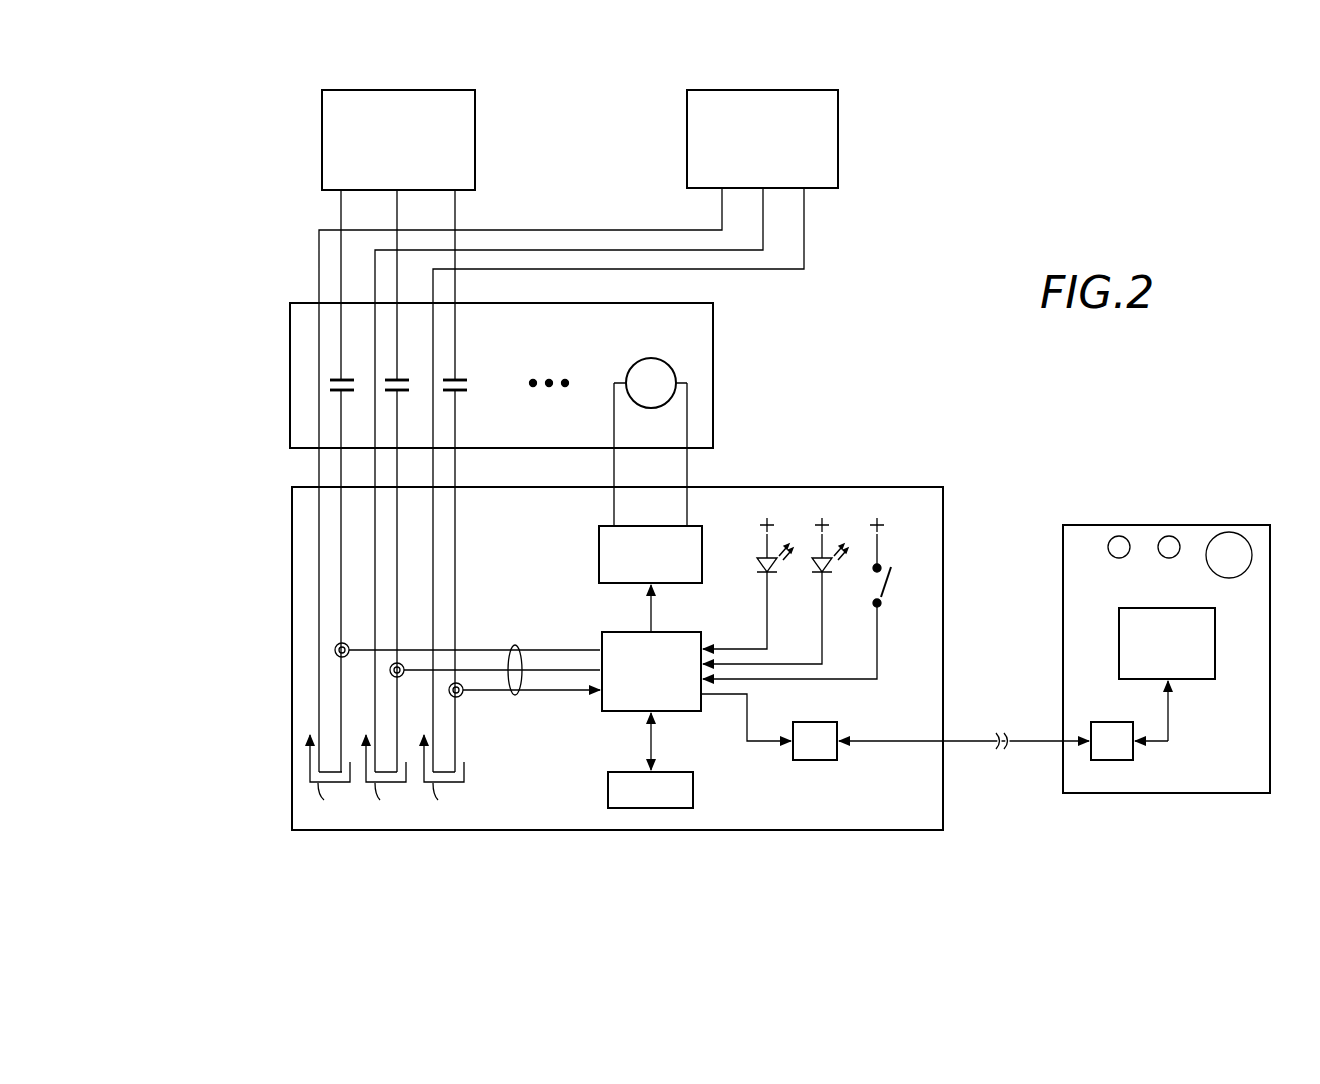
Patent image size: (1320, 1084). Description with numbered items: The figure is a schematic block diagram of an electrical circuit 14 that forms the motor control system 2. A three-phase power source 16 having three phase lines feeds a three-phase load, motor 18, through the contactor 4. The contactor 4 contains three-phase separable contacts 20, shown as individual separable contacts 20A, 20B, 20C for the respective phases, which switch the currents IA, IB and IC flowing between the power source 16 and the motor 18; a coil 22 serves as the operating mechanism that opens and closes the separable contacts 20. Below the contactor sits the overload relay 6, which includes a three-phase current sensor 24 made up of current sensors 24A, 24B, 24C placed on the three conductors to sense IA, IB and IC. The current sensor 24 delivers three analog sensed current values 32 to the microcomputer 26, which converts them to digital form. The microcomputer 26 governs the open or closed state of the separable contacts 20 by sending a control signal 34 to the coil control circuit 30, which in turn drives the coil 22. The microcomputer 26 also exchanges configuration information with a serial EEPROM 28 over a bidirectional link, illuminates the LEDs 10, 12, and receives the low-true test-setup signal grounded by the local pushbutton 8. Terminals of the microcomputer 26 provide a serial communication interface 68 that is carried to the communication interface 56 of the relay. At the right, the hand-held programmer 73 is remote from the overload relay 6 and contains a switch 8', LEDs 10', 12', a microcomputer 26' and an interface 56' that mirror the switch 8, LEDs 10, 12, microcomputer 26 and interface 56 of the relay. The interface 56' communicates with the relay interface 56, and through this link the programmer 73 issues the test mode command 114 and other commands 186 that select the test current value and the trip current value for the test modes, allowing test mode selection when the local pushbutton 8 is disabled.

The motor control system 2 is at (243, 476).
The contactor 4 is at (713, 313).
The overload relay 6 is at (880, 487).
The pushbutton 8 is at (809, 598).
The LED 10 is at (748, 583).
The LED 12 is at (775, 591).
The electrical circuit 14 is at (396, 858).
The three-phase power source 16 is at (476, 90).
The motor 18 is at (800, 90).
The three-phase separable contacts 20 is at (305, 373).
The separable contact 20A is at (337, 391).
The separable contact 20B is at (402, 382).
The separable contact 20C is at (458, 392).
The coil 22 is at (636, 366).
The three-phase current sensor 24 is at (328, 650).
The current sensor 24A is at (338, 657).
The current sensor 24B is at (403, 664).
The current sensor 24C is at (460, 697).
The microcomputer 26 is at (652, 692).
The EEPROM 28 is at (608, 790).
The coil control circuit 30 is at (599, 538).
The analog sensed current values 32 is at (515, 645).
The control signal 34 is at (651, 608).
The communication interface 56 is at (941, 726).
The serial communication interface 68 is at (747, 745).
The hand-held programmer 73 is at (1158, 793).
The switch 8' is at (1232, 534).
The LED 10' is at (1110, 524).
The LED 12' is at (1184, 524).
The microcomputer 26' is at (1185, 662).
The interface 56' is at (1123, 720).
The test mode command 114 is at (1015, 766).
The other commands 186 is at (1003, 853).